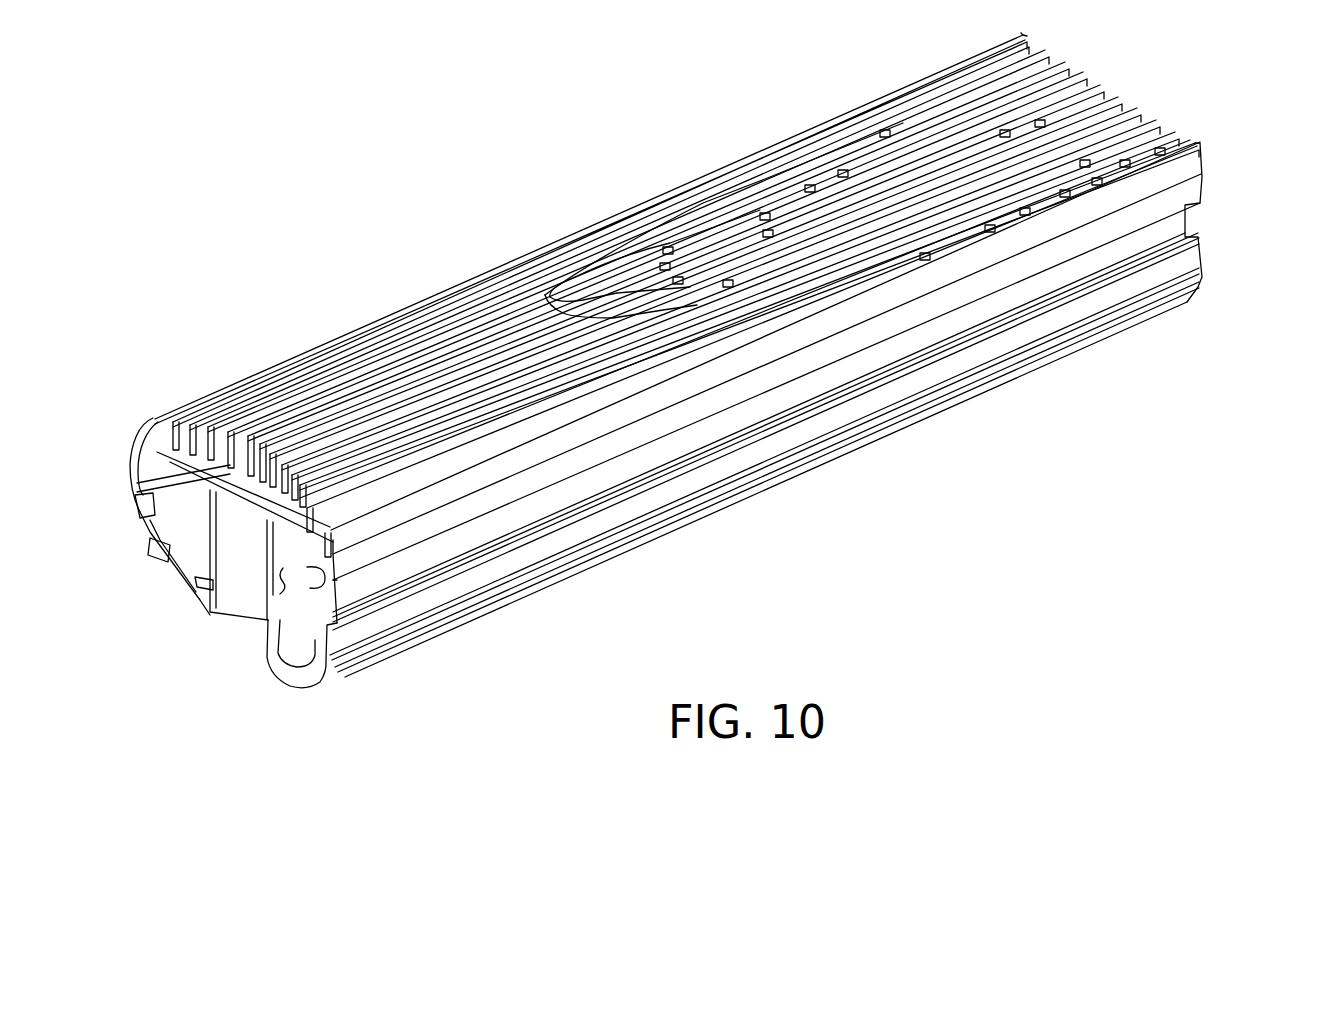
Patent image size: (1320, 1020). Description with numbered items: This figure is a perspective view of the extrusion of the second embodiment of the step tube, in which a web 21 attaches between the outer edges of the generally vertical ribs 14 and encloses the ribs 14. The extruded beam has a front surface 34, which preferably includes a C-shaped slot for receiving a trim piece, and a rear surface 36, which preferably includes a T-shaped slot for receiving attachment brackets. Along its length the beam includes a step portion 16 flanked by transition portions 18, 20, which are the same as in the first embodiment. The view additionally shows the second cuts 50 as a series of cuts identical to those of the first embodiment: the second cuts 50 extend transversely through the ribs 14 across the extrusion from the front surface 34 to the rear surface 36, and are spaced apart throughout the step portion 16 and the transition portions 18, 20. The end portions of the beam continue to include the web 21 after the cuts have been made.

The ribs 14 is at (148, 503).
The step portion 16 is at (1177, 165).
The transition portion 18 is at (712, 225).
The transition portion 20 is at (263, 397).
The web 21 is at (158, 542).
The front surface 34 is at (318, 642).
The rear surface 36 is at (130, 453).
The second cuts 50 is at (1155, 152).